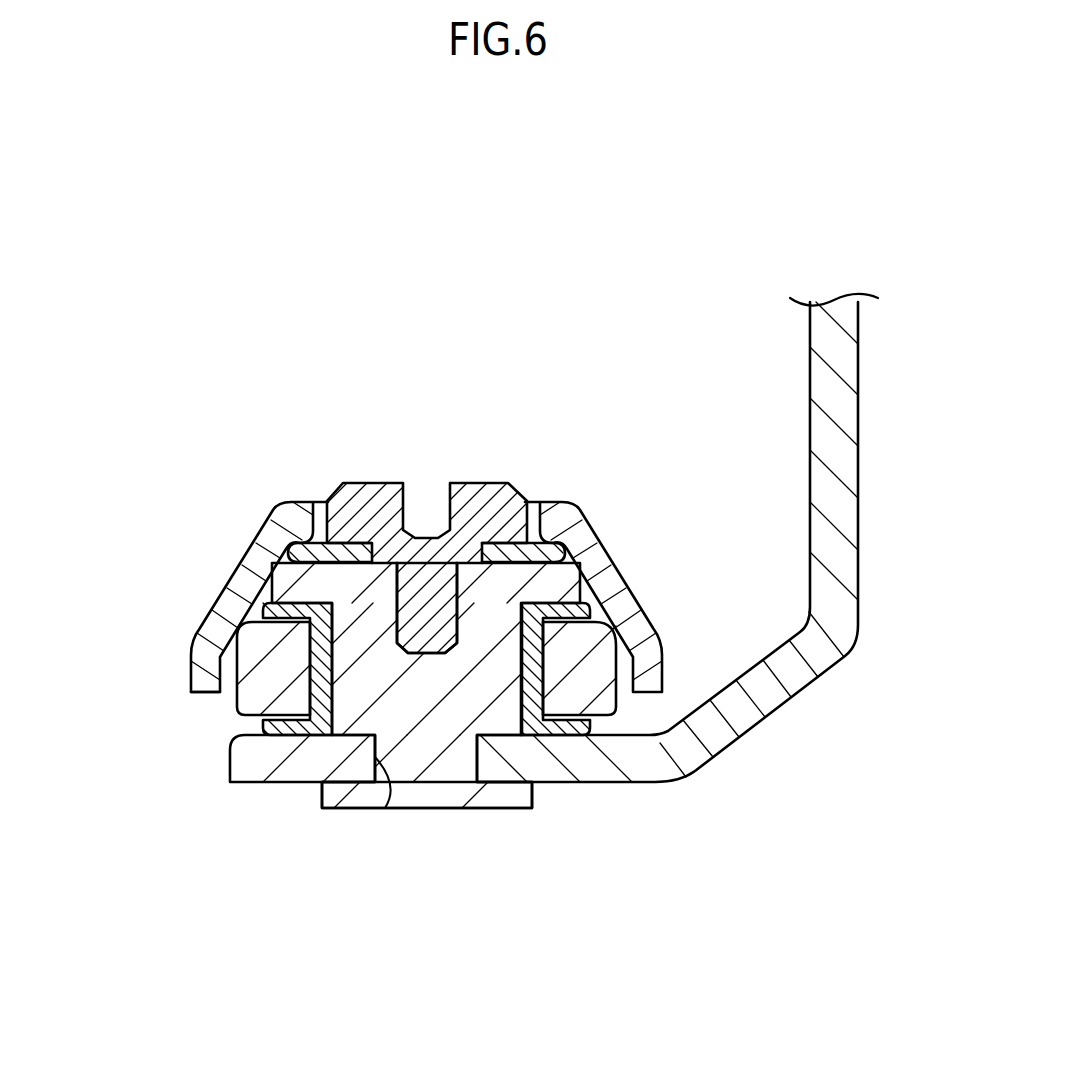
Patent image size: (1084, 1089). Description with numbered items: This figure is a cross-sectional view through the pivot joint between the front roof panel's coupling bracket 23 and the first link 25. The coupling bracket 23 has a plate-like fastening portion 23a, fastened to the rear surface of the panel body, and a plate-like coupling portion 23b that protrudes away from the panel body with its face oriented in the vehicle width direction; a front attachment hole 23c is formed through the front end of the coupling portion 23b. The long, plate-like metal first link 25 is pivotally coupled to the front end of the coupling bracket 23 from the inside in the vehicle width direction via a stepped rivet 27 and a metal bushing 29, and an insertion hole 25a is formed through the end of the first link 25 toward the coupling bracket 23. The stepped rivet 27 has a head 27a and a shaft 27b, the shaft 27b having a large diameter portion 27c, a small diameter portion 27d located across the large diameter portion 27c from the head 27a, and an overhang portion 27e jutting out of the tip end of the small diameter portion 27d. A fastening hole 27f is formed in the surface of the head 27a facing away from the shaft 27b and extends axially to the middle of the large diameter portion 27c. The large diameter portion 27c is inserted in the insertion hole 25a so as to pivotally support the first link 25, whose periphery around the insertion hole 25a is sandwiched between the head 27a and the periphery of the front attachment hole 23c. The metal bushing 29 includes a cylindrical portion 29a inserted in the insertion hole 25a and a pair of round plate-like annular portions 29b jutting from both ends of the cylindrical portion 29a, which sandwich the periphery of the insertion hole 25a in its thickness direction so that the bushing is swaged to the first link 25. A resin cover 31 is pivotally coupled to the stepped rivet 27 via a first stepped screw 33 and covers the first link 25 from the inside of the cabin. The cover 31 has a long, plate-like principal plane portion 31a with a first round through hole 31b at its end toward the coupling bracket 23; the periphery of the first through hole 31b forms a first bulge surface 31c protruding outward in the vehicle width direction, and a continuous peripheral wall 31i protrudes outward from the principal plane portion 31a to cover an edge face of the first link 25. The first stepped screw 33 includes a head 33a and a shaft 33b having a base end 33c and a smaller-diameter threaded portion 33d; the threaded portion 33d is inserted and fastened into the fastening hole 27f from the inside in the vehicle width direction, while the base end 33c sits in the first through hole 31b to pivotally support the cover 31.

The coupling bracket 23 is at (609, 799).
The fastening portion 23a is at (850, 368).
The coupling portion 23b is at (622, 785).
The front attachment hole 23c is at (386, 808).
The first link 25 is at (655, 630).
The insertion hole 25a is at (310, 603).
The stepped rivet 27 is at (513, 810).
The head 27a is at (558, 563).
The shaft 27b is at (116, 688).
The large diameter portion 27c is at (310, 692).
The small diameter portion 27d is at (374, 759).
The overhang portion 27e is at (321, 793).
The fastening hole 27f is at (416, 537).
The metal bushing 29 is at (592, 608).
The cylindrical portion 29a is at (310, 647).
The annular portions 29b is at (263, 612).
The cover 31 is at (664, 665).
The principal plane portion 31a is at (262, 506).
The first through hole 31b is at (383, 540).
The first bulge surface 31c is at (335, 495).
The peripheral wall 31i is at (195, 650).
The first stepped screw 33 is at (492, 482).
The head 33a is at (459, 481).
The shaft 33b is at (503, 880).
The base end 33c is at (495, 577).
The threaded portion 33d is at (465, 618).